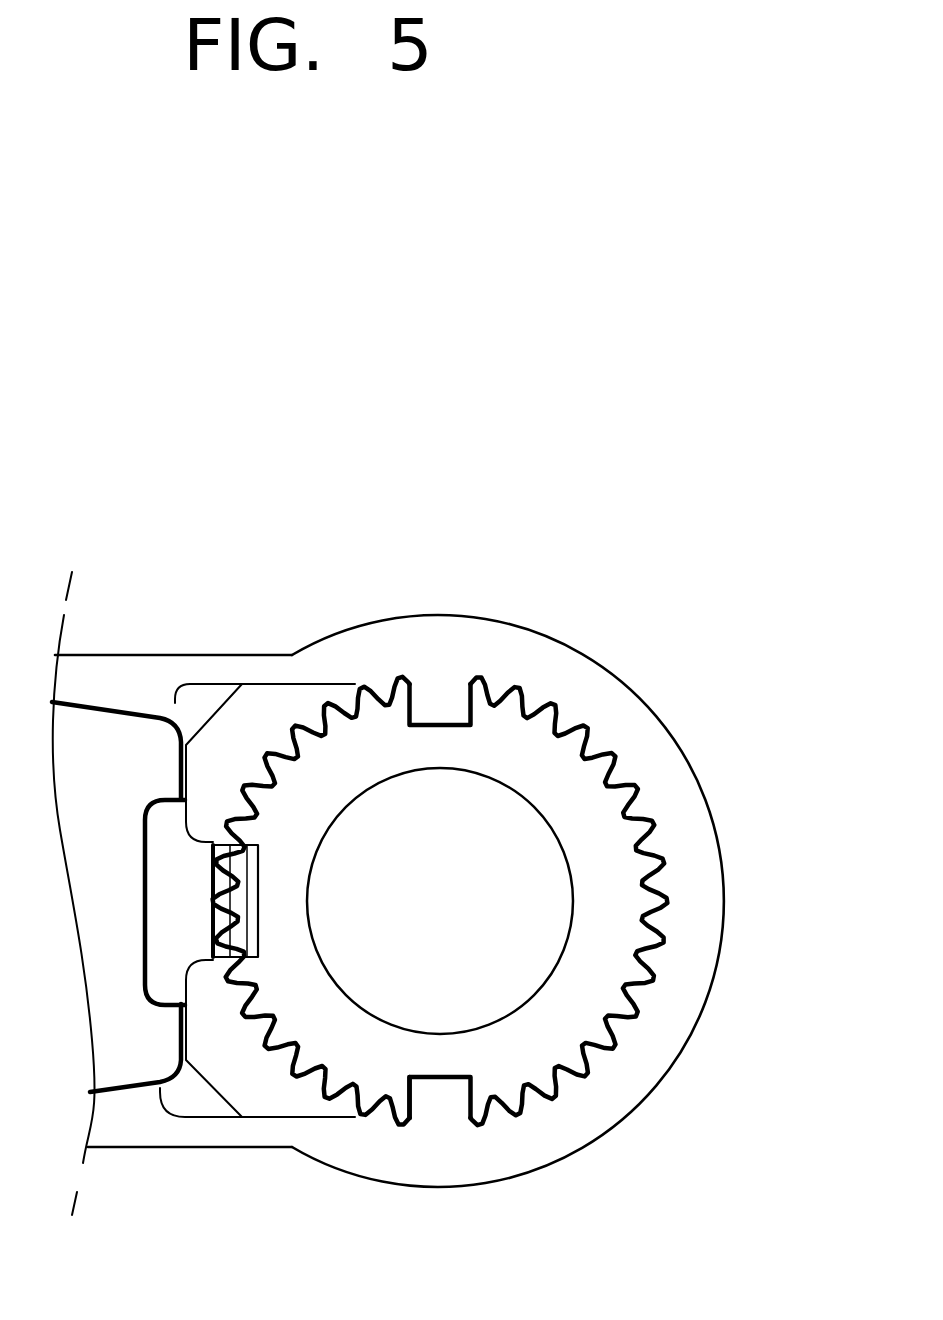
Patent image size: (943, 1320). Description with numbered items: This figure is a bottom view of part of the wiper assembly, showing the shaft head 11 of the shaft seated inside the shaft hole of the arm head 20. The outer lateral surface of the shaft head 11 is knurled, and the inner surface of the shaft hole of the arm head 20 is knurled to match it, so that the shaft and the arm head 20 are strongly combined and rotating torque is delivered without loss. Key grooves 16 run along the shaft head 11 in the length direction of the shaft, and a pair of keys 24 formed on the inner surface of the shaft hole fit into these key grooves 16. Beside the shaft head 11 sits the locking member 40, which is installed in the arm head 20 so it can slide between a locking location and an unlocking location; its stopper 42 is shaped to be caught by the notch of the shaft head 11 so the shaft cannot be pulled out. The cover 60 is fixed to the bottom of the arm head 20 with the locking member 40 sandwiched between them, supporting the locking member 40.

The shaft head 11 is at (592, 993).
The key grooves 16 is at (415, 1088).
The arm head 20 is at (645, 747).
The keys 24 is at (444, 687).
The locking member 40 is at (170, 827).
The stopper 42 is at (232, 893).
The cover 60 is at (102, 743).